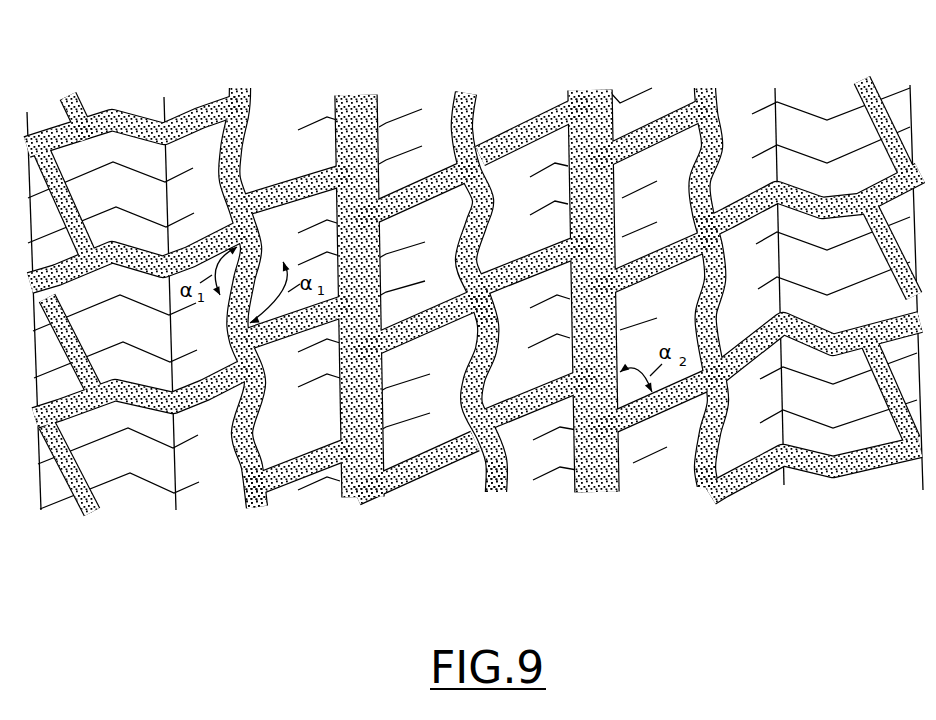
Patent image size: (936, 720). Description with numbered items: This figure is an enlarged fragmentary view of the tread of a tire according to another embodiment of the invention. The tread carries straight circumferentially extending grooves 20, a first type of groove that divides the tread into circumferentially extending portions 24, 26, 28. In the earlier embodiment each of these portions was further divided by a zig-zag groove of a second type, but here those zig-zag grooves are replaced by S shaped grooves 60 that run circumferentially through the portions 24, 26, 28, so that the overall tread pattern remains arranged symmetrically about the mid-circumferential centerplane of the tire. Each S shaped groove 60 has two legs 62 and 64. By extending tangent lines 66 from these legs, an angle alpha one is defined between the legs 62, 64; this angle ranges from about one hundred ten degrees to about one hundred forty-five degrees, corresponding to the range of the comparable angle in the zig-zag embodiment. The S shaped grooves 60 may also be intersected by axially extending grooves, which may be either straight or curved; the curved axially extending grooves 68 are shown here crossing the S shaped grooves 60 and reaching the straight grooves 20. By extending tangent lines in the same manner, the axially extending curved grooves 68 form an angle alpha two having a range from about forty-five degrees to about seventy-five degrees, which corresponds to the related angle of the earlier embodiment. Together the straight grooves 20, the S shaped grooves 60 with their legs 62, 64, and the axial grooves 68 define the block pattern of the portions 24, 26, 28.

The straight groove 20 is at (367, 490).
The circumferentially extending portion 24 is at (178, 88).
The circumferentially extending portion 26 is at (500, 78).
The circumferentially extending portion 28 is at (722, 76).
The S shaped groove 60 is at (241, 488).
The leg 62 is at (726, 225).
The leg 64 is at (716, 150).
The tangent line 66 is at (218, 168).
The axially extending curved groove 68 is at (531, 112).